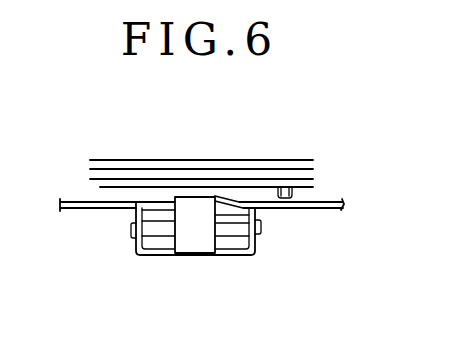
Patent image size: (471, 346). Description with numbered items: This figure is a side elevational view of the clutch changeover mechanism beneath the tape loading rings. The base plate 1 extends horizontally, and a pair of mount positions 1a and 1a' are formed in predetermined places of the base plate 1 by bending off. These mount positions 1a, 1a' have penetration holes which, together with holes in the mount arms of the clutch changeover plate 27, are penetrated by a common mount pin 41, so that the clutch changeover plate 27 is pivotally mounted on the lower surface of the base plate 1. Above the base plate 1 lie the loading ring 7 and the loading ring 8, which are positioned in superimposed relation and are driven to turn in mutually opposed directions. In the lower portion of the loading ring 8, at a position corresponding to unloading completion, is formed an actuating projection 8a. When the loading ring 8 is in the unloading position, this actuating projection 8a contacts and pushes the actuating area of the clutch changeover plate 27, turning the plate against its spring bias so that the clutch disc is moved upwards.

The base plate 1 is at (328, 208).
The mount position 1a is at (291, 243).
The mount position 1a' is at (99, 237).
The loading ring 7 is at (313, 160).
The loading ring 8 is at (313, 179).
The actuating projection 8a is at (287, 187).
The clutch changeover plate 27 is at (194, 247).
The mount pin 41 is at (157, 229).